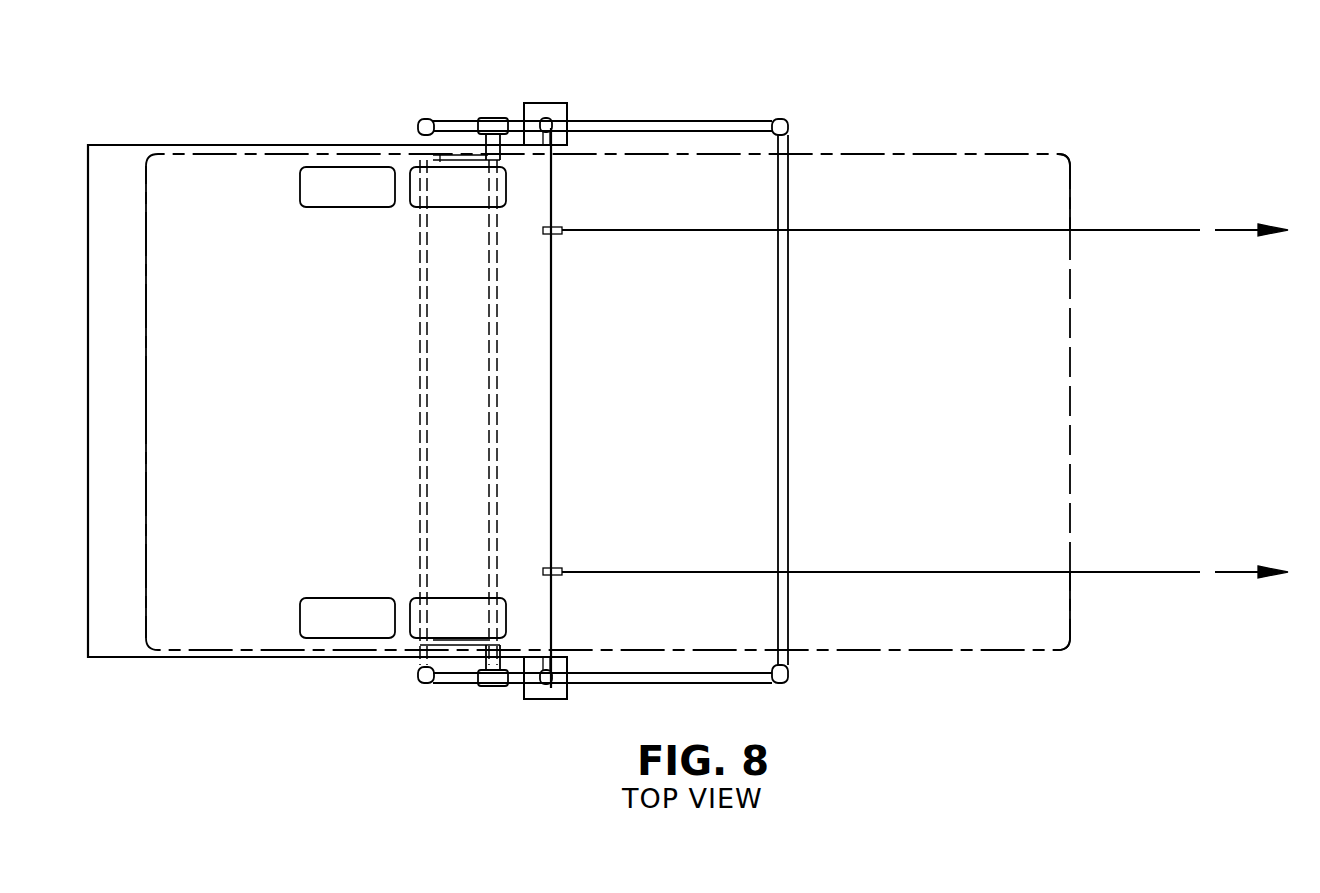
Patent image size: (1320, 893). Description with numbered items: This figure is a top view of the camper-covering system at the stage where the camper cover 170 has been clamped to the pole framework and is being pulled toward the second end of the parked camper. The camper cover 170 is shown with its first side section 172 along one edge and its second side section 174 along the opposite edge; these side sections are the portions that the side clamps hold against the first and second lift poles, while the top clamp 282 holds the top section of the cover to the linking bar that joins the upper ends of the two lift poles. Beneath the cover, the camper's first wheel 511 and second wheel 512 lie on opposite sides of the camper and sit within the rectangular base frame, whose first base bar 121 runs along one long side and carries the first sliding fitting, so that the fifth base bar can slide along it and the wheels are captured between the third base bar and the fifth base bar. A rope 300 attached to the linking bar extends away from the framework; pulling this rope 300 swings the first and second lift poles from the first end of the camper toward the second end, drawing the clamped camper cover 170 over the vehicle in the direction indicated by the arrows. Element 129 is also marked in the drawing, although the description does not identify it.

The camper cover 170 is at (140, 160).
The first side section 172 is at (297, 146).
The second side section 174 is at (237, 660).
The conveyor belt 129 is at (422, 170).
The first wheel 511 is at (462, 185).
The second wheel 512 is at (451, 615).
The first base bar 121 is at (677, 121).
The top clamp 282 is at (551, 233).
The rope 300 is at (1118, 571).